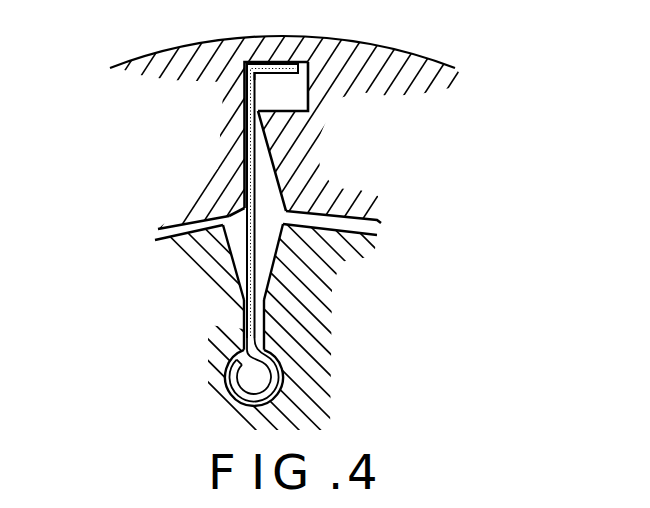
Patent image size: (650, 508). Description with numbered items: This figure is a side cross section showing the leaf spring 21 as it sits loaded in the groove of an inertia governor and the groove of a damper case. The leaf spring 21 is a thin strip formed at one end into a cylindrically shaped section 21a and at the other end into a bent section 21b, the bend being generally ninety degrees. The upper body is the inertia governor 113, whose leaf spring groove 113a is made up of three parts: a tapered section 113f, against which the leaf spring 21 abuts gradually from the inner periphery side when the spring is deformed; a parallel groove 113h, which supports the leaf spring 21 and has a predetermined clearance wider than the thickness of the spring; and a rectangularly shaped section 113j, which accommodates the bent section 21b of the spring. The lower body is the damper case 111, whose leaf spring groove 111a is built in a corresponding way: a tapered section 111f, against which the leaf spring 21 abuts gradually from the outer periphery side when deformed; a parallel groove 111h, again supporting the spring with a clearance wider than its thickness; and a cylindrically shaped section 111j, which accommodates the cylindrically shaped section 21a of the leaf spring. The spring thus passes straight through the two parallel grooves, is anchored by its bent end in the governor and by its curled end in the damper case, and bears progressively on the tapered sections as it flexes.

The leaf spring 21 is at (262, 172).
The cylindrically shaped section 21a is at (283, 351).
The bent section 21b is at (272, 66).
The damper case 111 is at (195, 312).
The leaf spring groove 111a is at (423, 288).
The tapered section 111f is at (268, 262).
The parallel groove 111h is at (262, 318).
The cylindrically shaped section 111j is at (284, 386).
The inertia governor 113 is at (194, 118).
The leaf spring groove 113a is at (463, 113).
The tapered section 113f is at (338, 204).
The parallel groove 113h is at (262, 134).
The rectangularly shaped section 113j is at (293, 94).